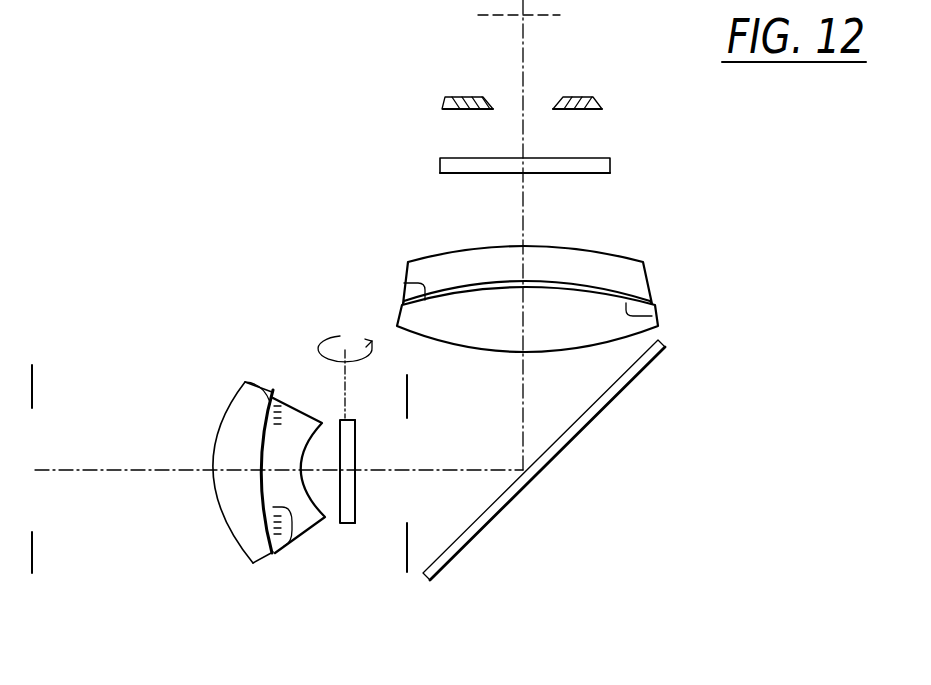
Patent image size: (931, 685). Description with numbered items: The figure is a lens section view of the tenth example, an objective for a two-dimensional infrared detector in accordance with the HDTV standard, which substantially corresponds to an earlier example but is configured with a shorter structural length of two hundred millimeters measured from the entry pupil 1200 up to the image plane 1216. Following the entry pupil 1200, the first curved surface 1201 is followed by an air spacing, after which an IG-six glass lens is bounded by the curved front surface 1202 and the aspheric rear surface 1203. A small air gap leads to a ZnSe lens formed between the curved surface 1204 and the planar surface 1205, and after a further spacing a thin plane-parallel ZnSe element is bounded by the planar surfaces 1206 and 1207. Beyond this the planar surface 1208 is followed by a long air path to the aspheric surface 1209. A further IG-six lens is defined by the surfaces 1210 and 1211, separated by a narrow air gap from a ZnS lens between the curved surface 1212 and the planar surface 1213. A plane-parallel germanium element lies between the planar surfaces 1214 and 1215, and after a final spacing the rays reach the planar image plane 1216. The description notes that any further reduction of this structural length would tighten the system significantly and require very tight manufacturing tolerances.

The entry pupil 1200 is at (32, 387).
The first lens surface 1201 is at (232, 547).
The IG6 lens front surface 1202 is at (245, 382).
The aspheric lens surface 1203 is at (295, 538).
The ZnSe lens front surface 1204 is at (310, 425).
The planar lens surface 1205 is at (338, 515).
The ZnSe plate surface 1206 is at (357, 515).
The planar surface 1207 is at (407, 390).
The planar surface 1208 is at (498, 508).
The aspheric surface 1209 is at (645, 334).
The IG6 lens front surface 1210 is at (655, 312).
The IG6 lens rear surface 1211 is at (423, 284).
The ZnS lens front surface 1212 is at (628, 253).
The planar lens surface 1213 is at (606, 173).
The Ge plate surface 1214 is at (609, 159).
The planar surface 1215 is at (583, 97).
The image plane 1216 is at (560, 14).